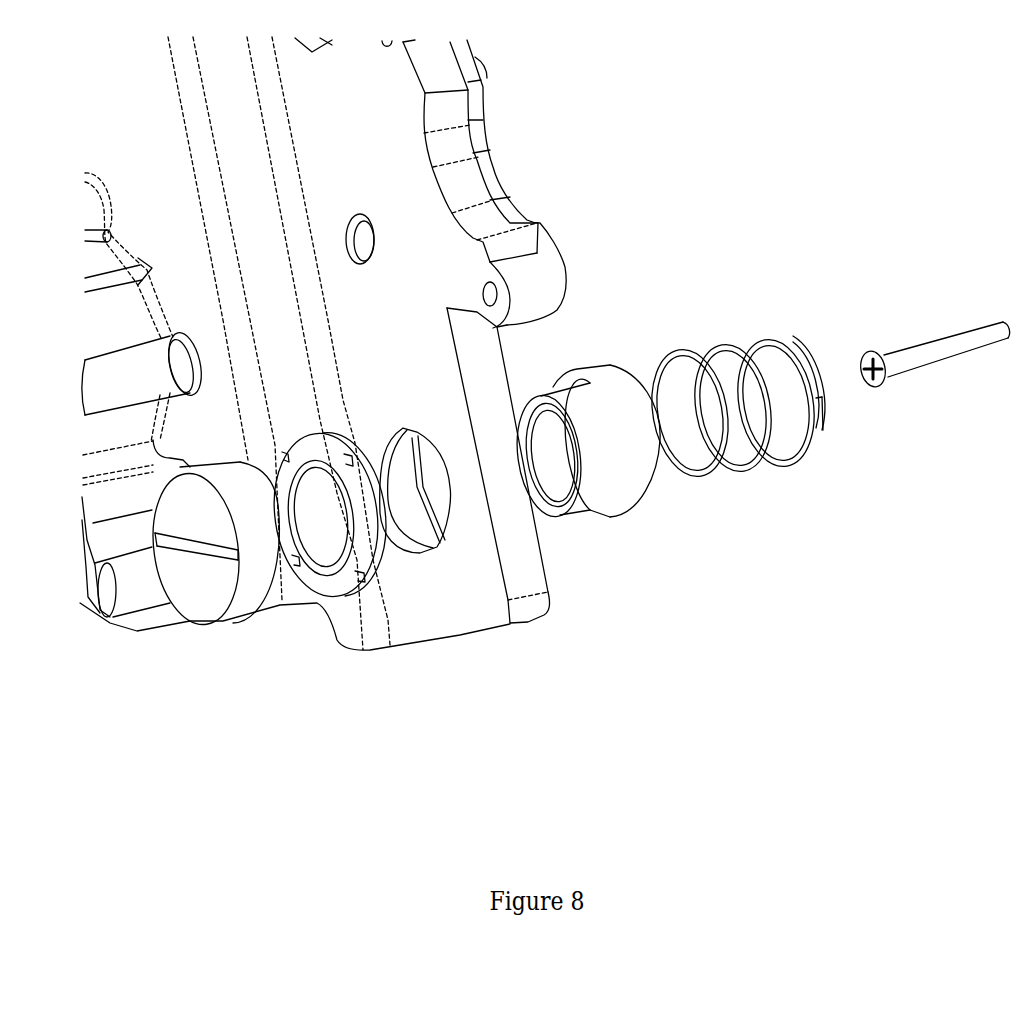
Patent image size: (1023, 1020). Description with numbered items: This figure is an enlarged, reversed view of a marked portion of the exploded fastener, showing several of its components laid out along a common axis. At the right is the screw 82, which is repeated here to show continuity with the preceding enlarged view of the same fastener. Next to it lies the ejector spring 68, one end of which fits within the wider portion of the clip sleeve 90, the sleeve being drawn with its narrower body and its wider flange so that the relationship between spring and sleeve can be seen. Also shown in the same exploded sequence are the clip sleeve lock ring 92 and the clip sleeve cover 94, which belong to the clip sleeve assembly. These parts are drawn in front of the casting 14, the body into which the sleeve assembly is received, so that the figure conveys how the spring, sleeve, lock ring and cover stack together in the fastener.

The steering wheel casting 14 is at (333, 406).
The ejector spring 68 is at (768, 340).
The screw 82 is at (925, 345).
The clip sleeve 90 is at (608, 365).
The clip sleeve lock ring 92 is at (351, 595).
The clip sleeve cover 94 is at (212, 609).